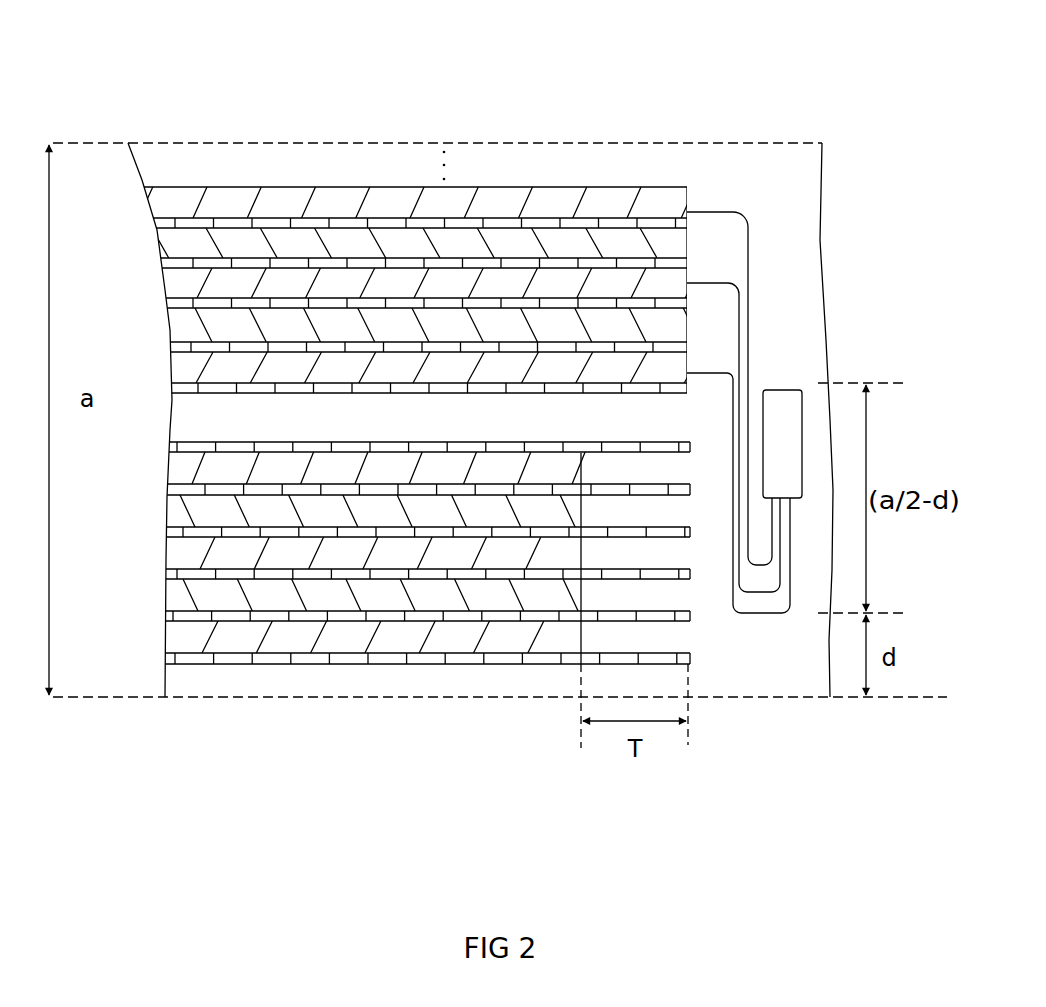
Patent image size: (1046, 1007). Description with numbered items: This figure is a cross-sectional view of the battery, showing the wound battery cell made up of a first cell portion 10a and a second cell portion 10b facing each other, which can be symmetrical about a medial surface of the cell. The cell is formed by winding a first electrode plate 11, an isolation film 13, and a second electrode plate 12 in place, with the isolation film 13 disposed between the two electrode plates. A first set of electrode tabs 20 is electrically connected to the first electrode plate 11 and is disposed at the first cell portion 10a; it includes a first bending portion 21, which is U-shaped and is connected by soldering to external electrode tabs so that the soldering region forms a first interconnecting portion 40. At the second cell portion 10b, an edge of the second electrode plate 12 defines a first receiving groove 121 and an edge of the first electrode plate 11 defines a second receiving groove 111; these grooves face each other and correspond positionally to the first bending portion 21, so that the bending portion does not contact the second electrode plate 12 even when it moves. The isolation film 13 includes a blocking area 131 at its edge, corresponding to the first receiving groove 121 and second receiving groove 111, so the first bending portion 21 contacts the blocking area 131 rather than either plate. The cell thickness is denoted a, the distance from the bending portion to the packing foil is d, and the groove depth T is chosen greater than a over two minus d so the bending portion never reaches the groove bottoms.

The first cell portion 10a is at (157, 303).
The second cell portion 10b is at (152, 582).
The first electrode plate 11 is at (503, 363).
The second electrode plate 12 is at (448, 328).
The isolation film 13 is at (332, 346).
The first set of electrode tabs 20 is at (712, 203).
The first bending portion 21 is at (760, 607).
The first interconnecting portion 40 is at (783, 398).
The second receiving groove 111 is at (667, 465).
The first receiving groove 121 is at (605, 507).
The blocking area 131 is at (640, 488).